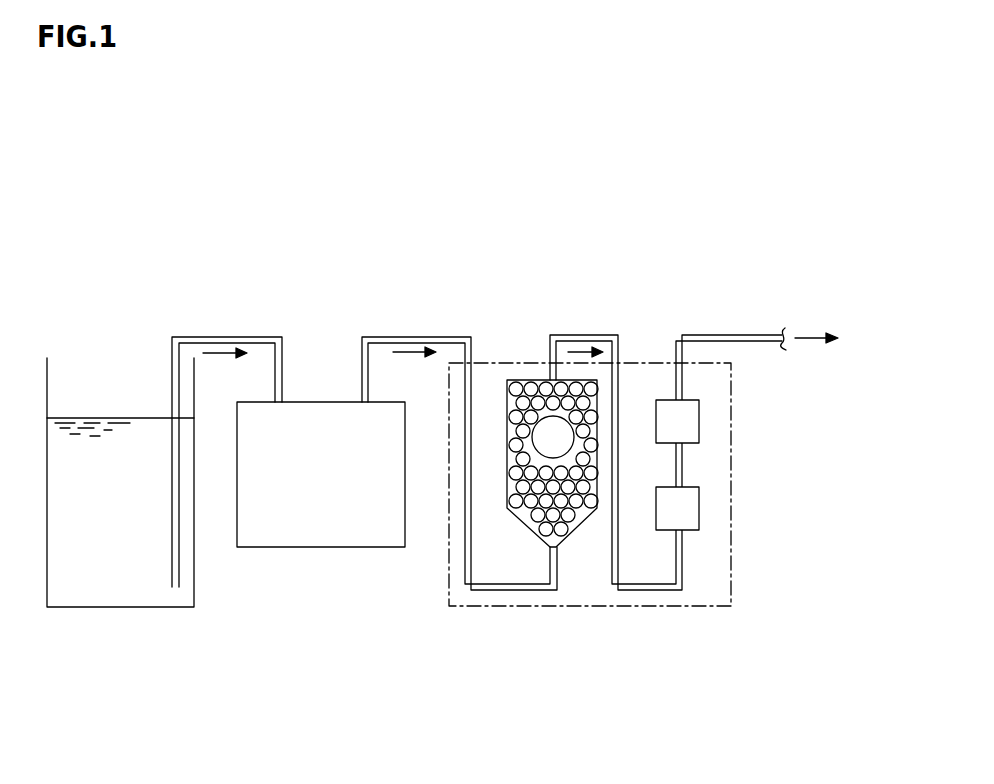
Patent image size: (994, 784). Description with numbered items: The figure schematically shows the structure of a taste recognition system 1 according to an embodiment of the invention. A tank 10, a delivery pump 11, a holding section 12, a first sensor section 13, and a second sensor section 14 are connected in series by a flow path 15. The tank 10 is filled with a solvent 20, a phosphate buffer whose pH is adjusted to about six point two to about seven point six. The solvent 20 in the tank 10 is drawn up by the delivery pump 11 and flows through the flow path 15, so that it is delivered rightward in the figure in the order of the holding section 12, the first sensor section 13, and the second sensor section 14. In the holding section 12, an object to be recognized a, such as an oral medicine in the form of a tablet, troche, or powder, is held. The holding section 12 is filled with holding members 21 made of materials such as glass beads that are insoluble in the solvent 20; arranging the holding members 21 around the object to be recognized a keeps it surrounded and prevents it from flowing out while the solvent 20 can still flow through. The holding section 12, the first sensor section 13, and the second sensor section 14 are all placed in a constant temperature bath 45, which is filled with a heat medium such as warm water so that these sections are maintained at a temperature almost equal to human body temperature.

The water treatment system 1 is at (459, 244).
The tank 10 is at (105, 610).
The solvent 20 is at (95, 418).
The delivery pump 11 is at (295, 548).
The flow path 15 is at (222, 337).
The constant temperature bath 45 is at (733, 570).
The holding section 12 is at (583, 523).
The holding members 21 is at (524, 515).
The object to be recognized a is at (547, 432).
The second sensor section 14 is at (700, 422).
The first sensor section 13 is at (700, 507).